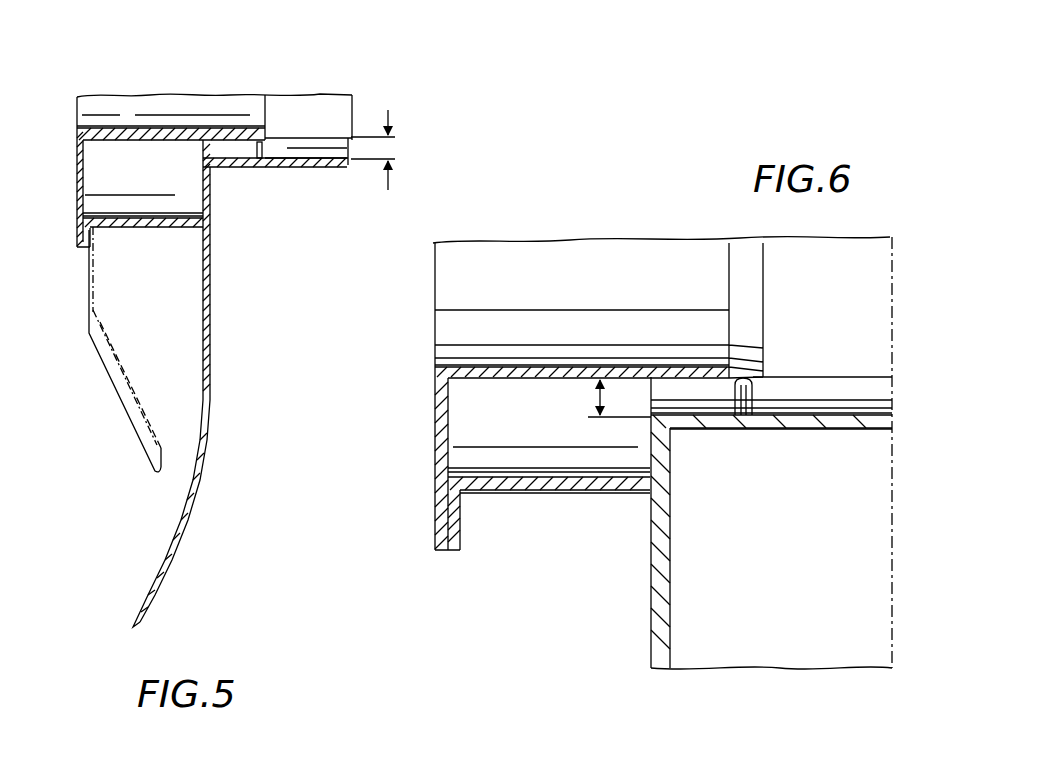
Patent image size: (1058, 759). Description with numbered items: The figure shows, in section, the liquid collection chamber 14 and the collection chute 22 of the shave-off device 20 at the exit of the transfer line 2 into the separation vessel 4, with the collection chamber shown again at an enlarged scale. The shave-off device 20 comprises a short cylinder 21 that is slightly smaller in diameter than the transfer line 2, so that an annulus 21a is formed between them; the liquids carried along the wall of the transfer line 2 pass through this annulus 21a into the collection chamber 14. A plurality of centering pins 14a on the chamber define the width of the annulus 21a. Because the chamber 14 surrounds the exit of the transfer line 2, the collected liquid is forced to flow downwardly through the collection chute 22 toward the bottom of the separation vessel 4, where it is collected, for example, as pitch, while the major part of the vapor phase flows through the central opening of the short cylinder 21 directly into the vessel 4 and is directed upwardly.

In FIG. 5, the transfer line 2 is at (335, 165).
In FIG. 6, the transfer line 2 is at (830, 428).
In FIG. 5, the separation vessel 4 is at (212, 372).
In FIG. 6, the separation vessel 4 is at (672, 610).
In FIG. 5, the liquid collection chamber 14 is at (170, 178).
In FIG. 6, the liquid collection chamber 14 is at (478, 427).
In FIG. 5, the centering pins 14a is at (263, 148).
In FIG. 6, the centering pins 14a is at (753, 395).
In FIG. 5, the shave-off device 20 is at (370, 86).
In FIG. 6, the shave-off device 20 is at (760, 458).
In FIG. 5, the short cylinder 21 is at (250, 128).
In FIG. 6, the short cylinder 21 is at (545, 365).
In FIG. 5, the annulus 21a is at (392, 148).
In FIG. 6, the annulus 21a is at (598, 398).
In FIG. 5, the collection chute 22 is at (130, 418).
In FIG. 6, the collection chute 22 is at (462, 535).